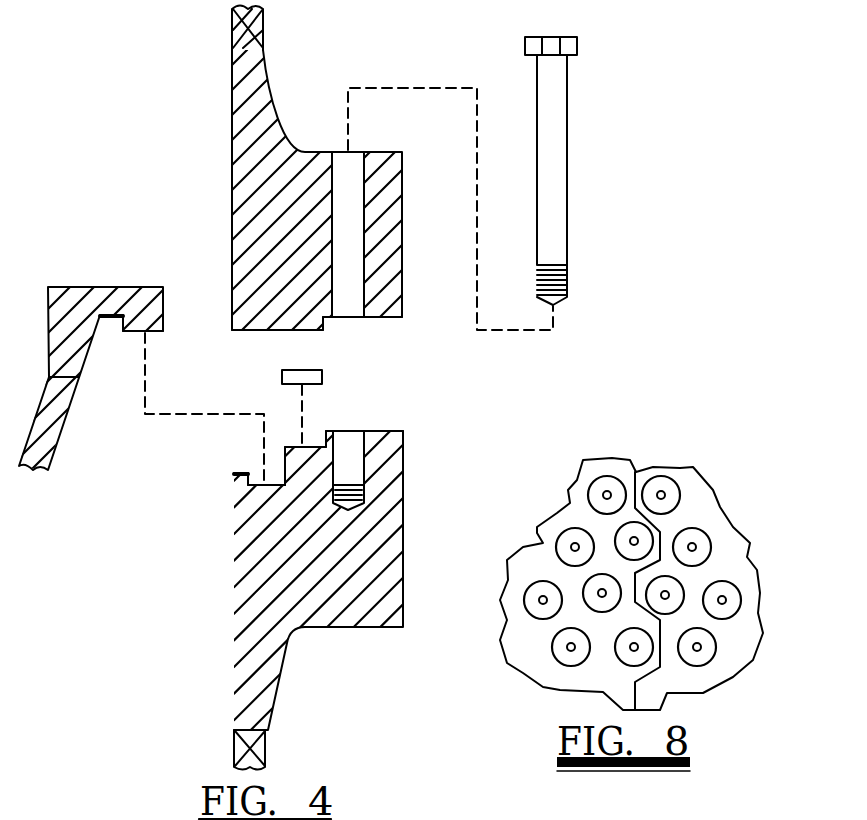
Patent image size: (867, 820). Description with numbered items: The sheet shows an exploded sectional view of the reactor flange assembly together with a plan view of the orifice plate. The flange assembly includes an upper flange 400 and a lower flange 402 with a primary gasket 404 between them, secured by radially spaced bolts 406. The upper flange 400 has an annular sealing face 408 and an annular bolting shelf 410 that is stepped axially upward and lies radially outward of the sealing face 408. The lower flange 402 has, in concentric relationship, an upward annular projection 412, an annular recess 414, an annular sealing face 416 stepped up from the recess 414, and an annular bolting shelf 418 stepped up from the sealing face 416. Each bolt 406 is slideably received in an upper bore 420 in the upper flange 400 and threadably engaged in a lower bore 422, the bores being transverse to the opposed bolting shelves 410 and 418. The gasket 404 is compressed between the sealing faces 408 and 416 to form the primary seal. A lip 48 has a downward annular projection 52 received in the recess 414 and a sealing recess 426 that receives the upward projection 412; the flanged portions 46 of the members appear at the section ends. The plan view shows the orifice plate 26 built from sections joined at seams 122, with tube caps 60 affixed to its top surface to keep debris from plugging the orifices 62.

In FIG. 4, the flange 46 is at (263, 36).
In FIG. 4, the lip 48 is at (93, 287).
In FIG. 4, the downward annular projection 52 is at (152, 331).
In FIG. 4, the annular sealing recess 426 is at (104, 320).
In FIG. 4, the upper flange 400 is at (292, 152).
In FIG. 4, the upper bore 420 is at (357, 180).
In FIG. 4, the bolts 406 is at (558, 190).
In FIG. 4, the annular sealing face 408 is at (279, 331).
In FIG. 4, the primary gasket 404 is at (322, 377).
In FIG. 4, the annular bolting shelf 410 is at (391, 318).
In FIG. 4, the annular sealing face 416 is at (301, 443).
In FIG. 4, the lower bore 422 is at (344, 448).
In FIG. 4, the annular bolting shelf 418 is at (404, 432).
In FIG. 4, the annular recess 414 is at (256, 480).
In FIG. 4, the upward annular projection 412 is at (238, 470).
In FIG. 4, the lower flange 402 is at (358, 566).
In FIG. 8, the seams 122 is at (640, 480).
In FIG. 8, the orifice plate 26 is at (705, 505).
In FIG. 8, the orifices 62 is at (541, 599).
In FIG. 8, the tube caps 60 is at (725, 600).